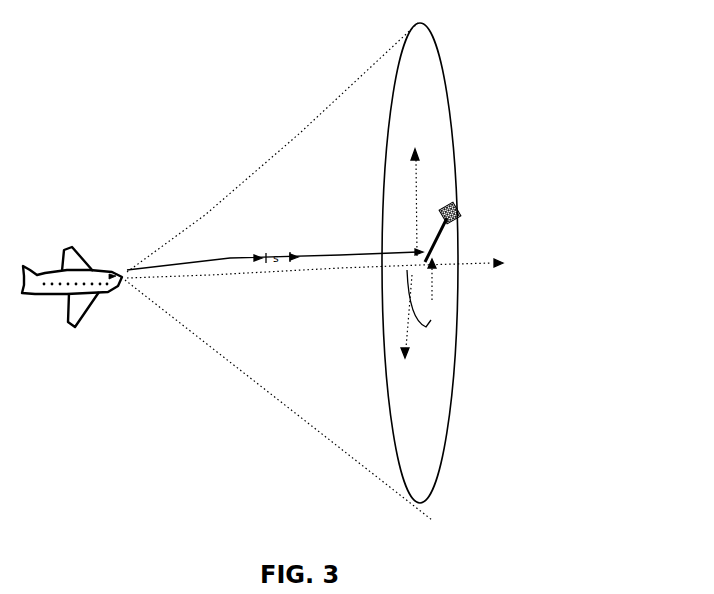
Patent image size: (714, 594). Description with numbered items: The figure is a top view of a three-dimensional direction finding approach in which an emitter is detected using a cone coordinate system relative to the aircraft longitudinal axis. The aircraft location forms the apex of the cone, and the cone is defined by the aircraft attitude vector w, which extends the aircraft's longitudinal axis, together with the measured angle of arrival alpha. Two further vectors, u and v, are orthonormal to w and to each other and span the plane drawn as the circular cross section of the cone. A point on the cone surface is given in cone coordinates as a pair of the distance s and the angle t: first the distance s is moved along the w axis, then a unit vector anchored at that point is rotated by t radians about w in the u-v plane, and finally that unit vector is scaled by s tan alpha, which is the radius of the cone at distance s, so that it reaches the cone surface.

The distance along the cone axis s is at (315, 267).
The rotation angle about the cone axis t is at (423, 228).